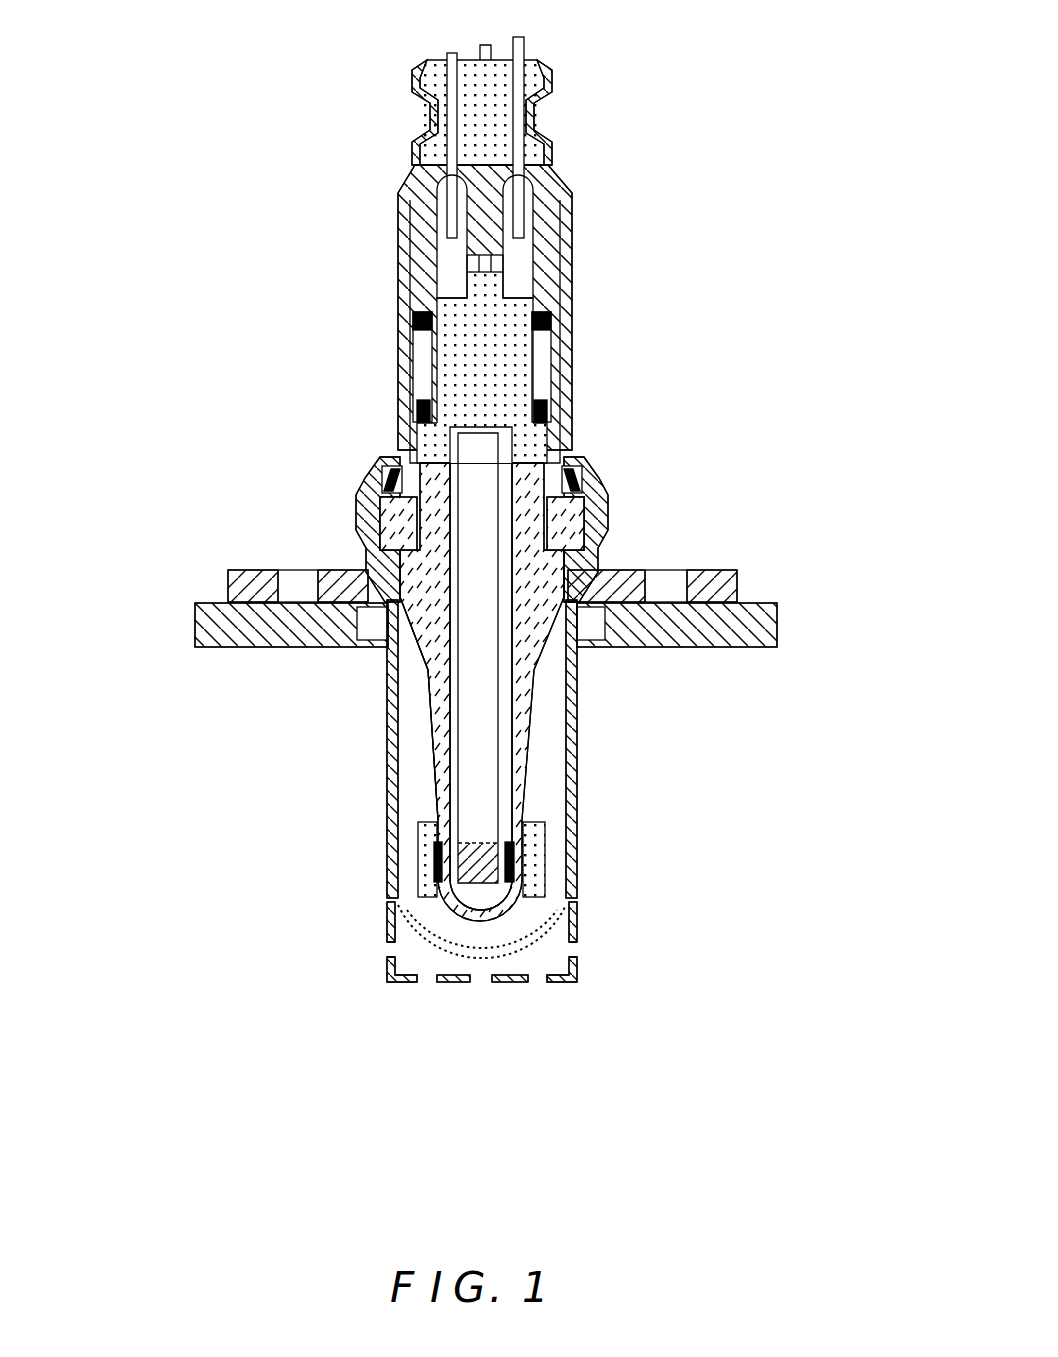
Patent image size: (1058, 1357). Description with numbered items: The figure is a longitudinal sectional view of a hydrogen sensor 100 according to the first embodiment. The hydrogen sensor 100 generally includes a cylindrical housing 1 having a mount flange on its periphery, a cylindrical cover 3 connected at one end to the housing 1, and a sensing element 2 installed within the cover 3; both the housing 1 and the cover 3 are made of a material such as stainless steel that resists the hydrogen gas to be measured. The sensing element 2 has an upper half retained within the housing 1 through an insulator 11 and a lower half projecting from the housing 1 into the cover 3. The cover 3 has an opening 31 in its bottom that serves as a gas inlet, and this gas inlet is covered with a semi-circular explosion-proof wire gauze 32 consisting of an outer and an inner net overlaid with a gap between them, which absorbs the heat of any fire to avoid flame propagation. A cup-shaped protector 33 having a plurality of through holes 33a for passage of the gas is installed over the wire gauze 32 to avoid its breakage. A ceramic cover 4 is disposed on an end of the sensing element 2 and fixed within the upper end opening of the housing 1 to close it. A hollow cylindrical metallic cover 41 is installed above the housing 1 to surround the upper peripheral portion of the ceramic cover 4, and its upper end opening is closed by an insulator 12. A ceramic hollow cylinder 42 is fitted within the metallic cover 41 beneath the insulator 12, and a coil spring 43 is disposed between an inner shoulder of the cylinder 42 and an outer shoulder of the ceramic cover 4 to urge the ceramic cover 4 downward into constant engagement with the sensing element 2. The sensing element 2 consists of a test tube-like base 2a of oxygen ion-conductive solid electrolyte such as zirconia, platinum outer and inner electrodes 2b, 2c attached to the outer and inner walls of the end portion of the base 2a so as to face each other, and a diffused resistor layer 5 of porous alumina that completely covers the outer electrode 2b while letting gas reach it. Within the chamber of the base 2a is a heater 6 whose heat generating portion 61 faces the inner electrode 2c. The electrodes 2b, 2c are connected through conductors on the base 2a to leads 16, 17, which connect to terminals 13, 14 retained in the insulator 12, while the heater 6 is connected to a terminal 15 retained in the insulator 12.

The hydrogen sensor 100 is at (185, 138).
The housing 1 is at (360, 548).
The sensing element 2 is at (555, 688).
The base 2a is at (440, 673).
The outer electrode 2b is at (527, 858).
The inner electrode 2c is at (466, 822).
The cover 3 is at (575, 759).
The opening 31 is at (575, 906).
The wire gauze 32 is at (507, 958).
The protector 33 is at (413, 983).
The through holes 33a is at (390, 951).
The ceramic cover 4 is at (540, 424).
The metallic cover 41 is at (573, 300).
The ceramic hollow cylinder 42 is at (574, 206).
The coil spring 43 is at (400, 330).
The diffused resistor layer 5 is at (420, 886).
The heater 6 is at (480, 553).
The heat generating portion 61 is at (455, 863).
The insulator 11 is at (360, 492).
The insulator 12 is at (548, 74).
The terminal 13 is at (526, 37).
The terminal 14 is at (447, 49).
The terminal 15 is at (481, 46).
The lead 16 is at (523, 258).
The lead 17 is at (440, 258).